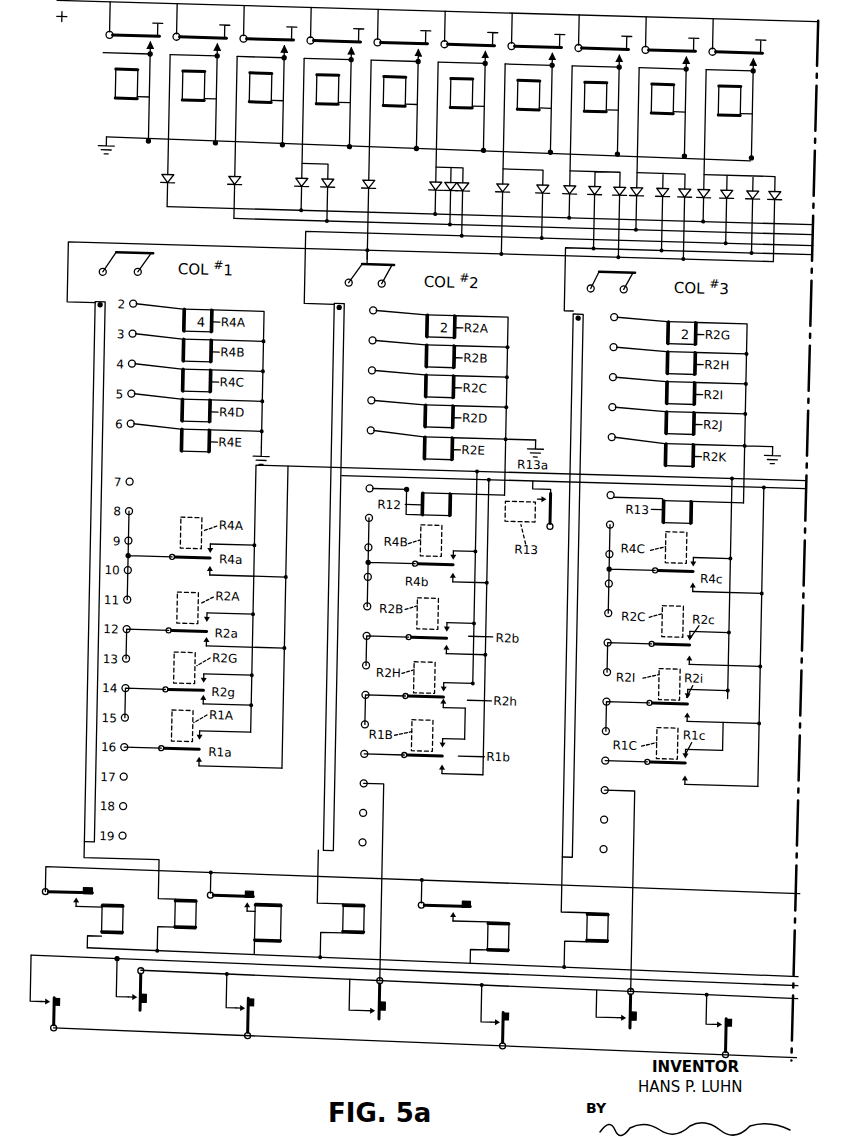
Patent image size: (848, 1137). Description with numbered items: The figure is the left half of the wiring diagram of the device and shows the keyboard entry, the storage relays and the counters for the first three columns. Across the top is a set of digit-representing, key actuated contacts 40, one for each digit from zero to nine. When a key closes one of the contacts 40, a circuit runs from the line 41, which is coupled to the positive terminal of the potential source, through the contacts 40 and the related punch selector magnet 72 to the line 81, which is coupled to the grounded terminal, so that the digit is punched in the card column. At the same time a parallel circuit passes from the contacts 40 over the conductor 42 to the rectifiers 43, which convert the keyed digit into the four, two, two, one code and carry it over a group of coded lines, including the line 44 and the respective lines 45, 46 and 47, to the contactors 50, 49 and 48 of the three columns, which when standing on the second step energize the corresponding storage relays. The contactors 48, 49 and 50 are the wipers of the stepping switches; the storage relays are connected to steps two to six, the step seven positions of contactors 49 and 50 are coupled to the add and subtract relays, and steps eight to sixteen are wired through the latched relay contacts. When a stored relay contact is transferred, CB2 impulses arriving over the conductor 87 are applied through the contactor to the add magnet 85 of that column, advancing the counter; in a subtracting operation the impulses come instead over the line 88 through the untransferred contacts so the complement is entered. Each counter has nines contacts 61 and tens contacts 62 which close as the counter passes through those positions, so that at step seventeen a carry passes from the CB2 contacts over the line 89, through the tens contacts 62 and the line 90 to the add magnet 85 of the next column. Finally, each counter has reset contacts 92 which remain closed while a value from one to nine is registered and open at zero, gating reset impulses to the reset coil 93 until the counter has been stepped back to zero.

The key actuated contacts 40 is at (408, 43).
The line 41 is at (80, 14).
The conductor 42 is at (630, 121).
The rectifiers 43 is at (530, 193).
The line 44 is at (191, 213).
The line 45 is at (252, 226).
The line 46 is at (412, 235).
The line 47 is at (207, 252).
The contactor 48 is at (127, 261).
The contactor 49 is at (356, 266).
The contactor 50 is at (595, 267).
The nines contacts 61 is at (143, 1011).
The tens contacts 62 is at (58, 1023).
The punch selector magnet 72 is at (385, 110).
The line 81 is at (118, 152).
The add magnet 85 is at (192, 913).
The conductor 87 is at (285, 469).
The line 88 is at (288, 524).
The line 89 is at (457, 1043).
The line 90 is at (49, 966).
The reset contacts 92 is at (262, 903).
The reset coil 93 is at (99, 901).